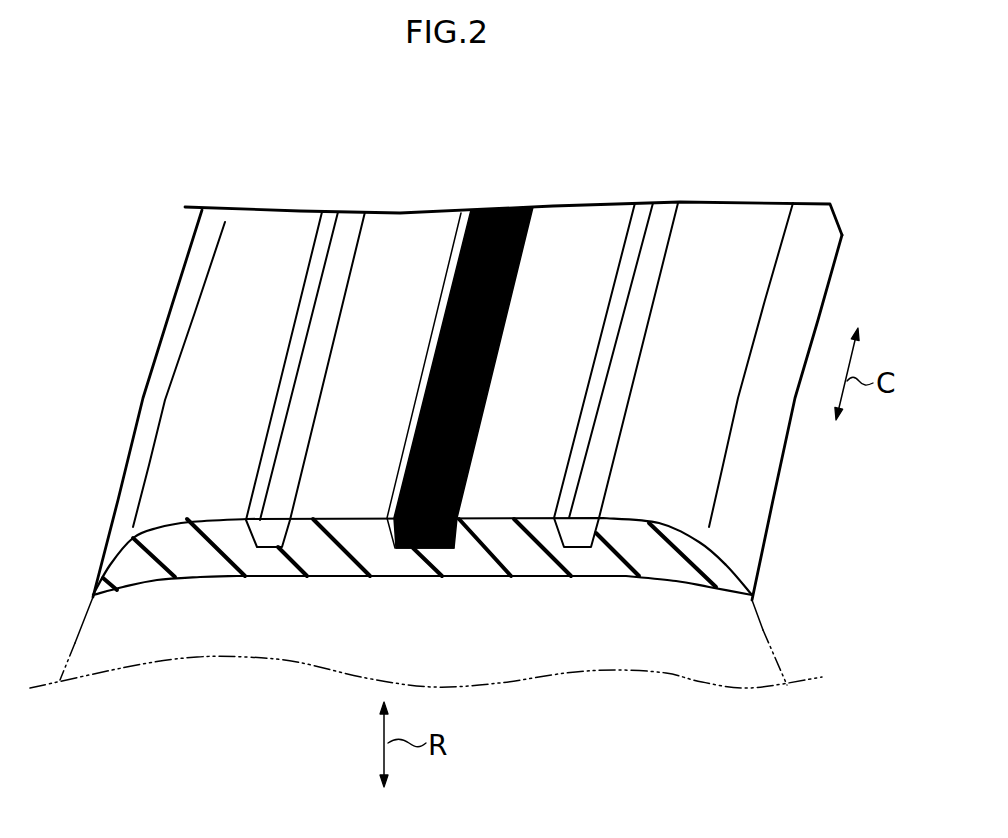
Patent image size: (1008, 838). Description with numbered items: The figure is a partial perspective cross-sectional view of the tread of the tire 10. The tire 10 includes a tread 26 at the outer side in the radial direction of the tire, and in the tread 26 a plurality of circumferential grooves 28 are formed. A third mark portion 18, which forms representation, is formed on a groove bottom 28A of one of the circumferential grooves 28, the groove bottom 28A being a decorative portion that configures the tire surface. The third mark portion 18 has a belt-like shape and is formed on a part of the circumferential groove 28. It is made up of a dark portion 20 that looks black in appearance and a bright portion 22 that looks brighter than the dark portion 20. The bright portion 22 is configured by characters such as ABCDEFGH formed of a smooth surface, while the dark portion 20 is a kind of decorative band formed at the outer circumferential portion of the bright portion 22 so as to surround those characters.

The tire 10 is at (758, 115).
The third mark portion 18 is at (503, 208).
The dark portion 20 is at (452, 328).
The bright portion 22 is at (485, 248).
The tread 26 is at (733, 237).
The circumferential groove 28 is at (405, 525).
The groove bottom 28A is at (442, 537).